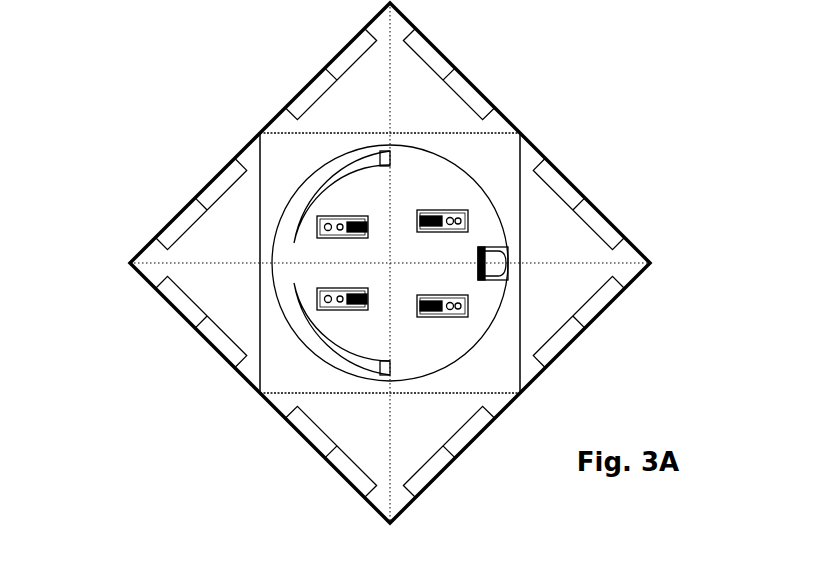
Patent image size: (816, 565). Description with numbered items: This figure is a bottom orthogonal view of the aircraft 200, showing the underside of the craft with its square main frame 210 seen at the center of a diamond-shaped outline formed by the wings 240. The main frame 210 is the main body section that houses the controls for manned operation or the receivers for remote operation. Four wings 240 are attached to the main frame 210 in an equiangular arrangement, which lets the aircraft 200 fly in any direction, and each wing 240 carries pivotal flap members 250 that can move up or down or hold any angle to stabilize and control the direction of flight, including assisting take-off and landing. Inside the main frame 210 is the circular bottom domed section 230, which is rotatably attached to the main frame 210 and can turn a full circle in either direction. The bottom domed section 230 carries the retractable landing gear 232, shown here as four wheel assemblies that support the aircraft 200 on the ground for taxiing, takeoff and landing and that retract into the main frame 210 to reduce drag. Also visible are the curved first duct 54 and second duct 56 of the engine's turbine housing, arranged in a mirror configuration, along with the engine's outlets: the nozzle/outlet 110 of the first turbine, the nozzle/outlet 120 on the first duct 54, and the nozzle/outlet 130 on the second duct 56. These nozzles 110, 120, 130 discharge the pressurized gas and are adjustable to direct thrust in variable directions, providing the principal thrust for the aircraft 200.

The aircraft 200 is at (372, 268).
The wings 240 is at (153, 258).
The pivotal flap members 250 is at (603, 297).
The main frame 210 is at (522, 383).
The bottom domed section 230 is at (287, 330).
The retractable landing gear 232 is at (460, 211).
The second duct 56 is at (342, 167).
The nozzle/outlet 120 is at (388, 159).
The first duct 54 is at (327, 350).
The nozzle/outlet 130 is at (393, 372).
The nozzle/outlet 110 is at (505, 262).